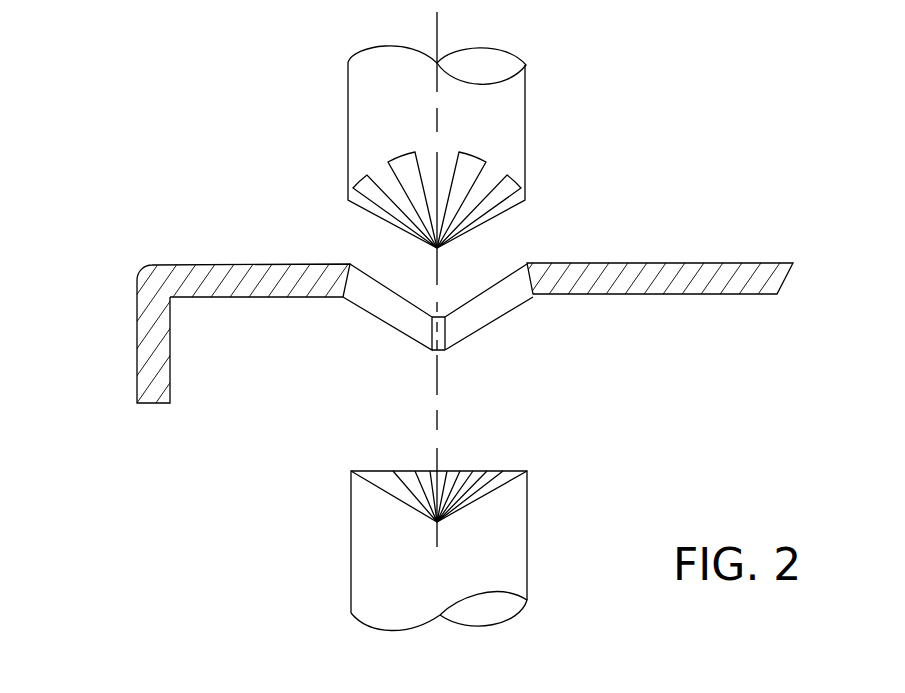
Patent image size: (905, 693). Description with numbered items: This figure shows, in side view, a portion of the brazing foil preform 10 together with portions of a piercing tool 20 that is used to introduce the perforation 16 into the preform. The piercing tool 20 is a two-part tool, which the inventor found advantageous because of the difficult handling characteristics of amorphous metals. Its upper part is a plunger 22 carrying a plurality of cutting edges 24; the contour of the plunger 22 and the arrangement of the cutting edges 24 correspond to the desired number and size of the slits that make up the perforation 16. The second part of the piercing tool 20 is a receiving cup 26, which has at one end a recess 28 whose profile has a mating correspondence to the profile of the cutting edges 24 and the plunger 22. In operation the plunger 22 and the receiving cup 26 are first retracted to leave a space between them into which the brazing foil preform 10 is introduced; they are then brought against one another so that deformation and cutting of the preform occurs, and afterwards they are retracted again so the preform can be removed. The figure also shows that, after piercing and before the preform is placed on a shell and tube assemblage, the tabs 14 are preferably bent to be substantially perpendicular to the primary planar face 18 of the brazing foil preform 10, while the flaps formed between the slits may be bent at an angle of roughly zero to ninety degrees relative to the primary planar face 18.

The brazing foil preform 10 is at (686, 247).
The tabs 14 is at (122, 362).
The perforation 16 is at (363, 332).
The primary planar face 18 is at (172, 262).
The piercing tool 20 is at (562, 83).
The plunger 22 is at (505, 138).
The cutting edges 24 is at (362, 209).
The receiving cup 26 is at (372, 583).
The recess 28 is at (368, 472).